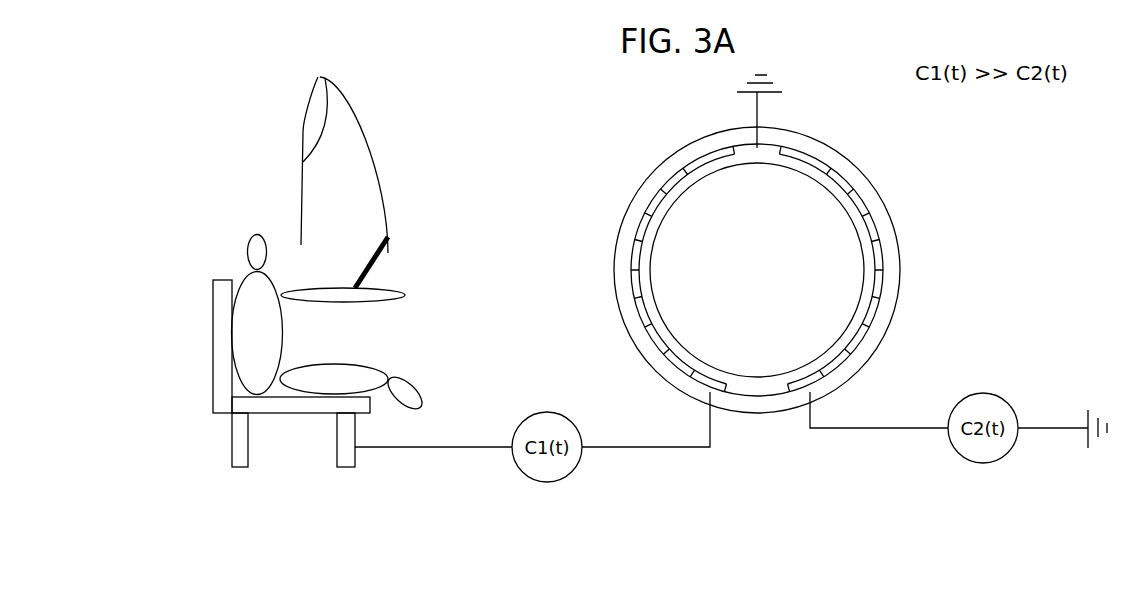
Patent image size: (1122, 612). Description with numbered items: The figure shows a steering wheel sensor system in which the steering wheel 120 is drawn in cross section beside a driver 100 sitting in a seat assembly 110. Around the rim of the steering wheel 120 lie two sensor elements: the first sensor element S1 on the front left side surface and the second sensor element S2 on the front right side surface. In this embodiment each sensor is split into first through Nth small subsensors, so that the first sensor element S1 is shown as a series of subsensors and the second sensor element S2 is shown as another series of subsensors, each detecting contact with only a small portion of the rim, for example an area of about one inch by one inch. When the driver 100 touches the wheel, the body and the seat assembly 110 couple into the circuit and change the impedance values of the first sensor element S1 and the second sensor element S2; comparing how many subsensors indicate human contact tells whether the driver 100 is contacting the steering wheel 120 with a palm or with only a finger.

The driver 100 is at (242, 278).
The seat assembly 110 is at (212, 340).
The steering wheel 120 is at (895, 288).
The first sensor element S1 is at (640, 238).
The second sensor element S2 is at (873, 240).